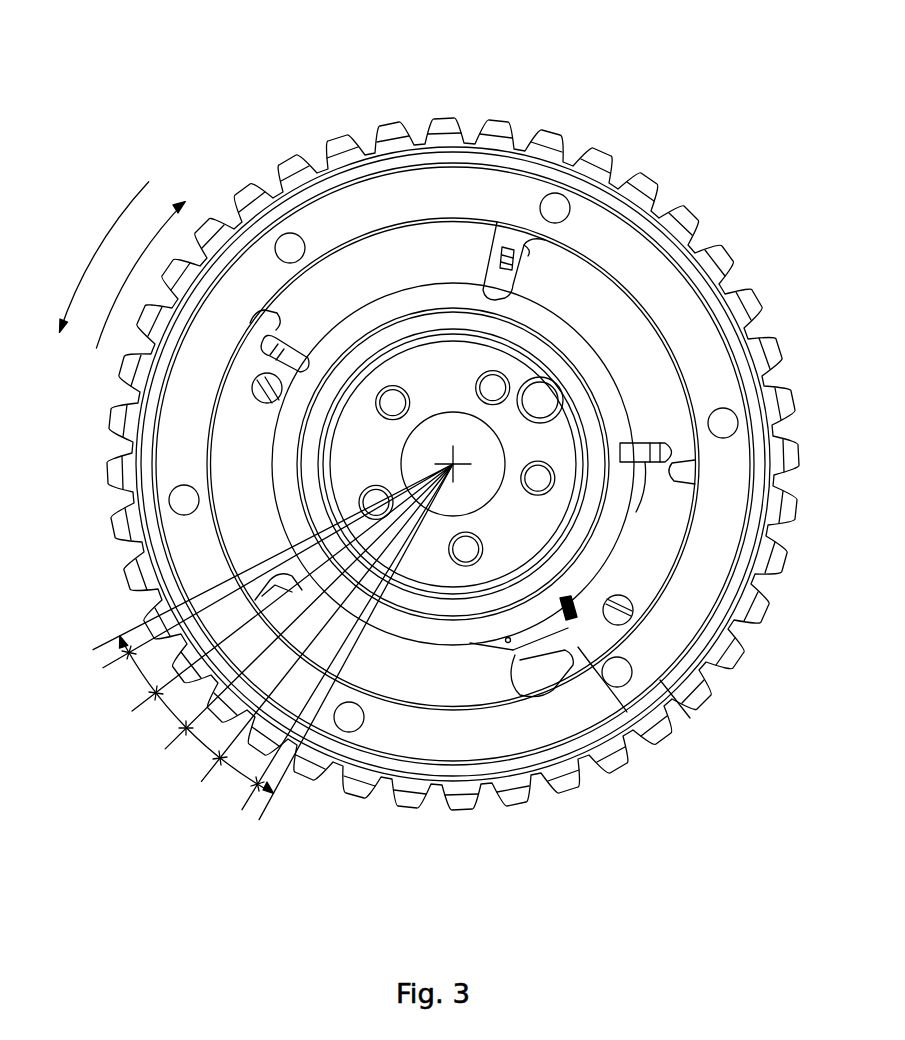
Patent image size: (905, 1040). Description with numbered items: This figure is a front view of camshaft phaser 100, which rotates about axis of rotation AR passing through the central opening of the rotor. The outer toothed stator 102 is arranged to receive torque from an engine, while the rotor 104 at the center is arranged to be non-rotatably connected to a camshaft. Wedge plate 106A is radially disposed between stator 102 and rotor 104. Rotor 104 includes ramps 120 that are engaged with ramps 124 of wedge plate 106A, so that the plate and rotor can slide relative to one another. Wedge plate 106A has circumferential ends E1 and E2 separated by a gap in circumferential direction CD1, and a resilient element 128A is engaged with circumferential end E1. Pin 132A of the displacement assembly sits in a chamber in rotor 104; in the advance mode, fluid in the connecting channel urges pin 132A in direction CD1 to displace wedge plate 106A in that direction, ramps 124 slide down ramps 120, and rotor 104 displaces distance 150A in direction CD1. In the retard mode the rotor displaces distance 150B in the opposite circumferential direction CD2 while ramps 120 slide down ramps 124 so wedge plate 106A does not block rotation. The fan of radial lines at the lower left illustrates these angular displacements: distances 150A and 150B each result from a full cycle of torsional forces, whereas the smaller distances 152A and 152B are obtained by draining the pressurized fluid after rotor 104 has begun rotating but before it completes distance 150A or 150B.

The camshaft phaser 100 is at (434, 441).
The stator 102 is at (610, 145).
The rotor 104 is at (403, 330).
The wedge plate 106A is at (337, 300).
The ramps 120 is at (518, 288).
The ramps 124 is at (480, 288).
The resilient element 128A is at (568, 640).
The pin 132A is at (525, 660).
The distance 150A is at (128, 678).
The distance 150B is at (240, 780).
The distance 152A is at (124, 647).
The distance 152B is at (266, 808).
The axis of rotation AR is at (455, 462).
The circumferential direction CD1 is at (150, 237).
The circumferential direction CD2 is at (120, 222).
The circumferential end E1 is at (673, 686).
The circumferential end E2 is at (510, 650).